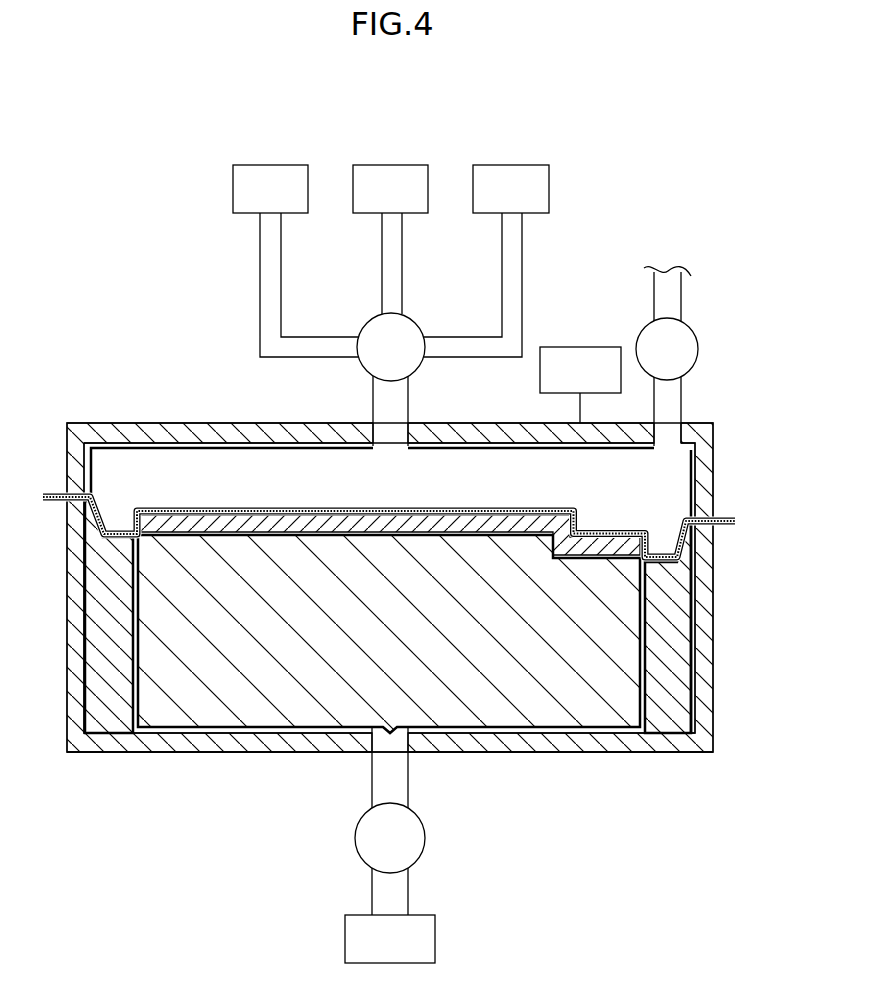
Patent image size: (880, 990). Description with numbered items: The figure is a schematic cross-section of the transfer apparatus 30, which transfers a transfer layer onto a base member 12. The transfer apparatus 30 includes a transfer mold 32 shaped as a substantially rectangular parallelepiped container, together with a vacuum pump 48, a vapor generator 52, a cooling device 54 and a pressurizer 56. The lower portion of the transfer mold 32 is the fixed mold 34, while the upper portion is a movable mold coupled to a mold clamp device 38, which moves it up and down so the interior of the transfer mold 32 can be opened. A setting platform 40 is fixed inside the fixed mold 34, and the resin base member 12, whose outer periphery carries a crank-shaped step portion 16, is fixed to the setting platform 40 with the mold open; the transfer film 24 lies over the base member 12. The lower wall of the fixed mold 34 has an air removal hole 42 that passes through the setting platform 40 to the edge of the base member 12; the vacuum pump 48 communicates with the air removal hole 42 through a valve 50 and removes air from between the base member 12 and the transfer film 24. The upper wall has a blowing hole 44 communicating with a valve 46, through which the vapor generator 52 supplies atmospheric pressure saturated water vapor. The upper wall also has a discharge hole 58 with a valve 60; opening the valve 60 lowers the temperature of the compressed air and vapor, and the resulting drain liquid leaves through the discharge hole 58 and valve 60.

The transfer apparatus 30 is at (103, 160).
The transfer mold 32 is at (84, 418).
The fixed mold 34 is at (617, 754).
The setting platform 40 is at (110, 724).
The base member 12 is at (171, 540).
The step portion 16 is at (606, 561).
The transfer film 24 is at (736, 524).
The blowing hole 44 is at (374, 432).
The valve 46 is at (363, 323).
The vapor generator 52 is at (268, 165).
The cooling device 54 is at (388, 165).
The pressurizer 56 is at (510, 165).
The mold clamp device 38 is at (583, 347).
The discharge hole 58 is at (670, 432).
The valve 60 is at (697, 338).
The air removal hole 42 is at (372, 750).
The valve 50 is at (425, 840).
The vacuum pump 48 is at (435, 942).